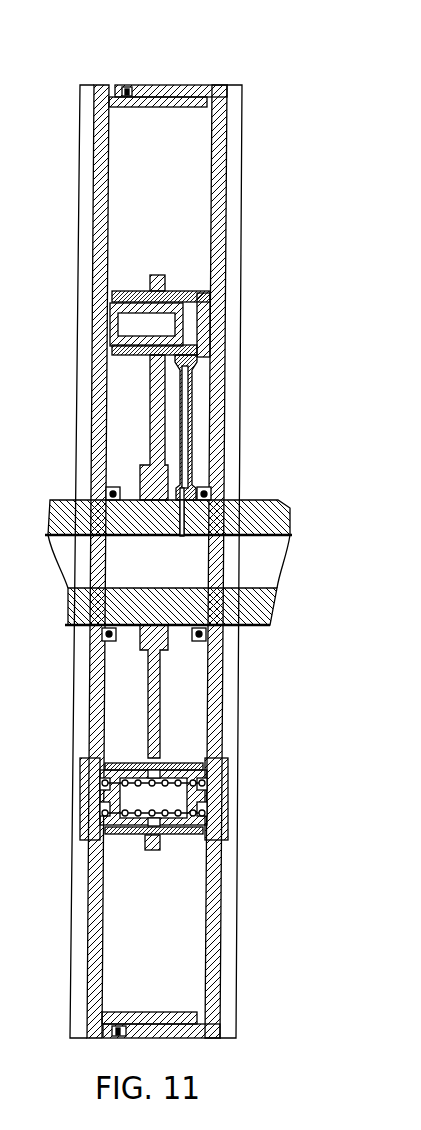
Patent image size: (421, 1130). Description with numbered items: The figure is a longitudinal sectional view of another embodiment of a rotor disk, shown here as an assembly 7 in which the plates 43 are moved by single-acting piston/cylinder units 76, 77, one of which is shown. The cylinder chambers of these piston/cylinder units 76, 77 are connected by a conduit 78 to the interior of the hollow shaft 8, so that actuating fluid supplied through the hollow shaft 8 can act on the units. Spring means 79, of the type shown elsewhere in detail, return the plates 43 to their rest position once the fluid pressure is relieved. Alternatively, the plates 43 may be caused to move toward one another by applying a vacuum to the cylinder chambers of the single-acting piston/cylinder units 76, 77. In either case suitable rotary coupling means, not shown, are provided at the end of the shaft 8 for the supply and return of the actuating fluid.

The telescopic actuator unit 7 is at (176, 529).
The plate 43 is at (100, 232).
The single-acting piston/cylinder unit 76 is at (112, 322).
The single-acting piston/cylinder unit 77 is at (208, 318).
The conduit 78 is at (190, 412).
The hollow shaft 8 is at (255, 515).
The spring means 79 is at (247, 803).